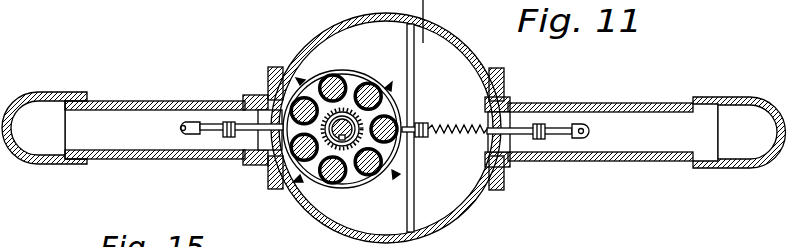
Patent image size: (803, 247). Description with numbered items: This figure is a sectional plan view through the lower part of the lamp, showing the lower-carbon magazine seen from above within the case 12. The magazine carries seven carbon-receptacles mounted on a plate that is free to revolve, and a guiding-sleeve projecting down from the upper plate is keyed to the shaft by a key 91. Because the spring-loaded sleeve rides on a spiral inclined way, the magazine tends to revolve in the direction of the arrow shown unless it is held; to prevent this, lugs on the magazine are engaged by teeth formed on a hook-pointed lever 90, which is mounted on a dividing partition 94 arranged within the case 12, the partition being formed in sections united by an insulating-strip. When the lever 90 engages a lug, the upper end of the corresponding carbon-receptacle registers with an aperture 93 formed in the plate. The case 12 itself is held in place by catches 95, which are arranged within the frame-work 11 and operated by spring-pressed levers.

The frame-work 11 is at (739, 132).
The case 12 is at (477, 72).
The hook-pointed lever 90 is at (418, 137).
The key 91 is at (366, 171).
The aperture 93 is at (334, 51).
The dividing partition 94 is at (416, 212).
The catches 95 is at (223, 124).